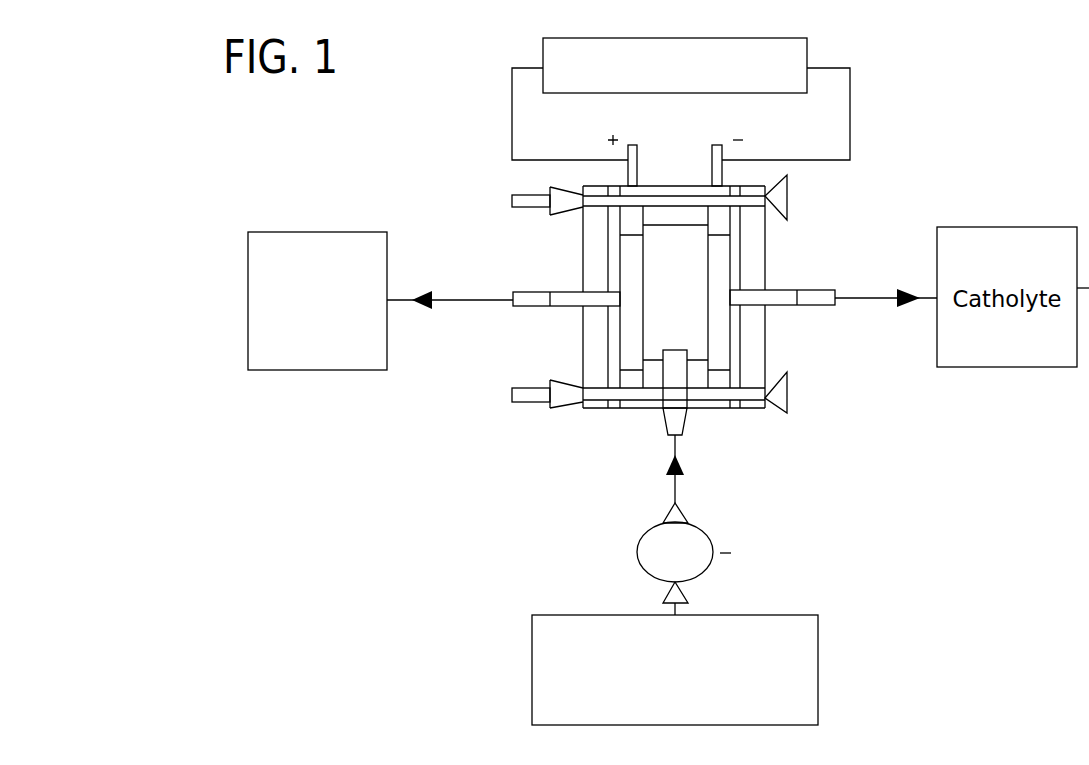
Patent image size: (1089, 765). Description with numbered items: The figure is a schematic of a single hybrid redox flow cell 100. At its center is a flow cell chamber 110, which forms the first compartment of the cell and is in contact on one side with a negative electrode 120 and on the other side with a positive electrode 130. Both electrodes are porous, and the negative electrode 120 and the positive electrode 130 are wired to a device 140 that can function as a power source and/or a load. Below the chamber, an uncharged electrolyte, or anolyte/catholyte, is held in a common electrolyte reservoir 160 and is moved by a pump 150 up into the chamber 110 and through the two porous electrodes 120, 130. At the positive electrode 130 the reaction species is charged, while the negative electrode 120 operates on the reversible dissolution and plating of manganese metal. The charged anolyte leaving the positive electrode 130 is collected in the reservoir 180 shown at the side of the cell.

The hybrid redox flow cell 100 is at (958, 122).
The flow cell chamber 110 is at (667, 320).
The negative electrode 120 is at (718, 262).
The positive electrode 130 is at (632, 268).
The device 140 is at (783, 38).
The pump 150 is at (637, 557).
The electrolyte reservoir 160 is at (818, 662).
The reservoir 180 is at (315, 232).